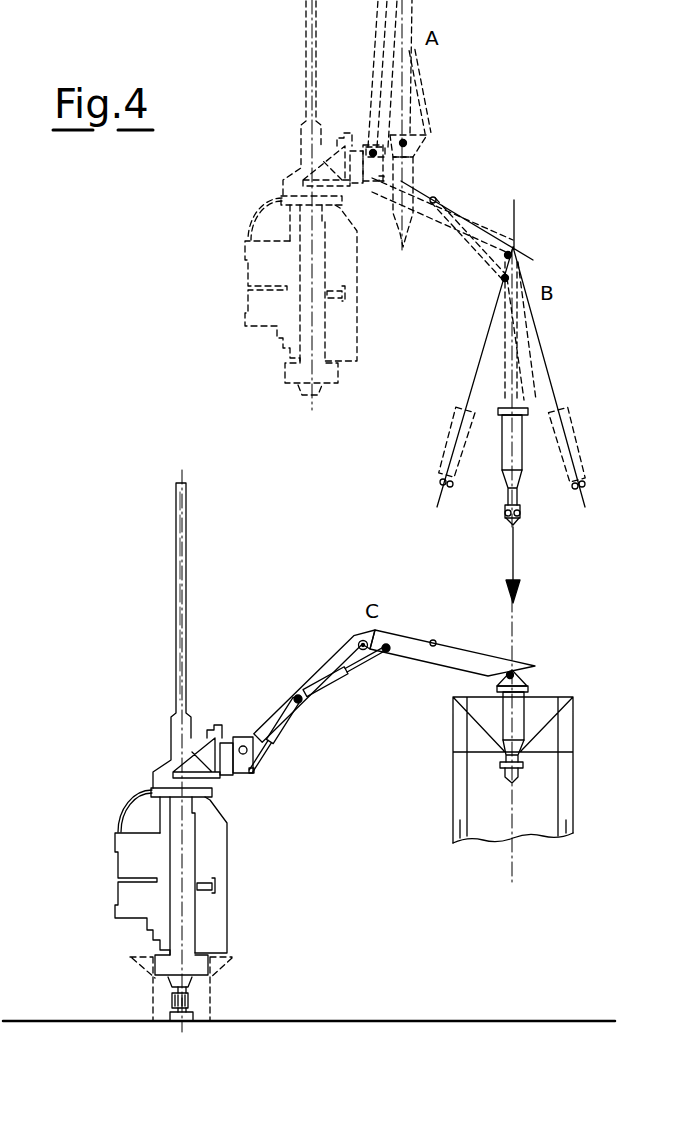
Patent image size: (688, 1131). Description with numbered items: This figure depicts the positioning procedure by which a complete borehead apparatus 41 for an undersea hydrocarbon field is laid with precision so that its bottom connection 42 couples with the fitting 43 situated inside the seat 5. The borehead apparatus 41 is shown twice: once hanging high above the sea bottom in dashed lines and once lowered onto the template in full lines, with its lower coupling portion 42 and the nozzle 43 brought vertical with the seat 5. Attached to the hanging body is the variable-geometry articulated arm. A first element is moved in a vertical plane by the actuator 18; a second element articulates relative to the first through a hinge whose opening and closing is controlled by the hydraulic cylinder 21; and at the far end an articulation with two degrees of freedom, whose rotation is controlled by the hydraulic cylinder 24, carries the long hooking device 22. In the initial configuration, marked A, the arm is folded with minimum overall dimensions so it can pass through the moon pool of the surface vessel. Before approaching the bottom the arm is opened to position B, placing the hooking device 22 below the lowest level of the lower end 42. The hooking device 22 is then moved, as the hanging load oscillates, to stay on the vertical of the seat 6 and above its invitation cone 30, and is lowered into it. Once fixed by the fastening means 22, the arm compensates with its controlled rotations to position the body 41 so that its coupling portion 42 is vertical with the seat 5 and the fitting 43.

The seat 5 is at (203, 1000).
The seat 6 is at (540, 820).
The actuator 18 is at (470, 650).
The hydraulic cylinder 21 is at (343, 678).
The hooking device 22 is at (520, 448).
The hydraulic cylinder 24 is at (285, 722).
The invitation cone 30 is at (537, 720).
The borehead apparatus 41 is at (142, 860).
The bottom connection 42 is at (170, 982).
The fitting 43 is at (170, 1000).